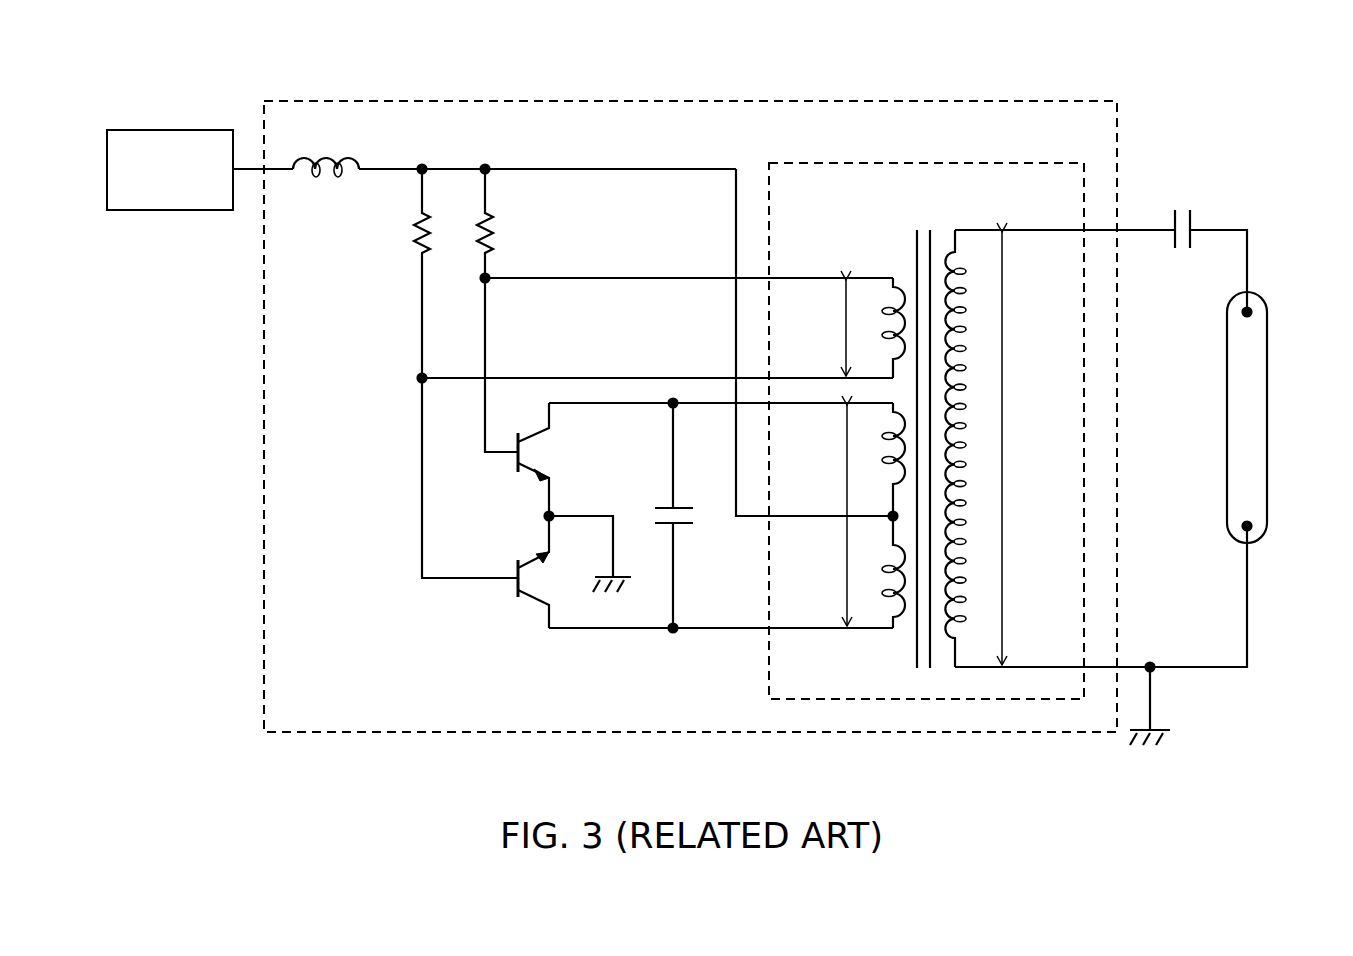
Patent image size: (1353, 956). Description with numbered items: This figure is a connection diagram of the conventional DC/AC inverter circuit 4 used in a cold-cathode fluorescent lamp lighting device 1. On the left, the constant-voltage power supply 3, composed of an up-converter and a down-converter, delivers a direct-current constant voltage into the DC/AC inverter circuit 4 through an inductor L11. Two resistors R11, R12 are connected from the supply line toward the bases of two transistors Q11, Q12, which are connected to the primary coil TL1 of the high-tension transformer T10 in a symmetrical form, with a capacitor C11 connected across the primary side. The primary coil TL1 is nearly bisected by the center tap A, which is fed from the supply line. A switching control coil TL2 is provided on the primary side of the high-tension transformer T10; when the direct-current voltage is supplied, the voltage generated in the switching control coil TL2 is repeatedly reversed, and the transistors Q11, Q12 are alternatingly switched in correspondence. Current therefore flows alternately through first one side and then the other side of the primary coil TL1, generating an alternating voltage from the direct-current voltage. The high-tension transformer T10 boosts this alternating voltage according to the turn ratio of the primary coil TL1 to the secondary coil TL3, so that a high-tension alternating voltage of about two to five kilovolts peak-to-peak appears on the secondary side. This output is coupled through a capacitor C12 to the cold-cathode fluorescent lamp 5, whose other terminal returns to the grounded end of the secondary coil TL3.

The cold-cathode fluorescent lamp lighting device 1 is at (1142, 66).
The constant-voltage power supply 3 is at (161, 130).
The DC/AC inverter circuit 4 is at (736, 102).
The cold-cathode fluorescent lamp 5 is at (1268, 364).
The inductor L11 is at (325, 156).
The resistor R11 is at (414, 232).
The resistor R12 is at (500, 232).
The transistor Q11 is at (512, 464).
The transistor Q12 is at (512, 592).
The capacitor C11 is at (665, 507).
The capacitor C12 is at (1193, 225).
The high-tension transformer T10 is at (862, 163).
The primary coil TL1 is at (846, 573).
The switching control coil TL2 is at (845, 322).
The secondary coil TL3 is at (1003, 290).
The center tap A is at (890, 514).